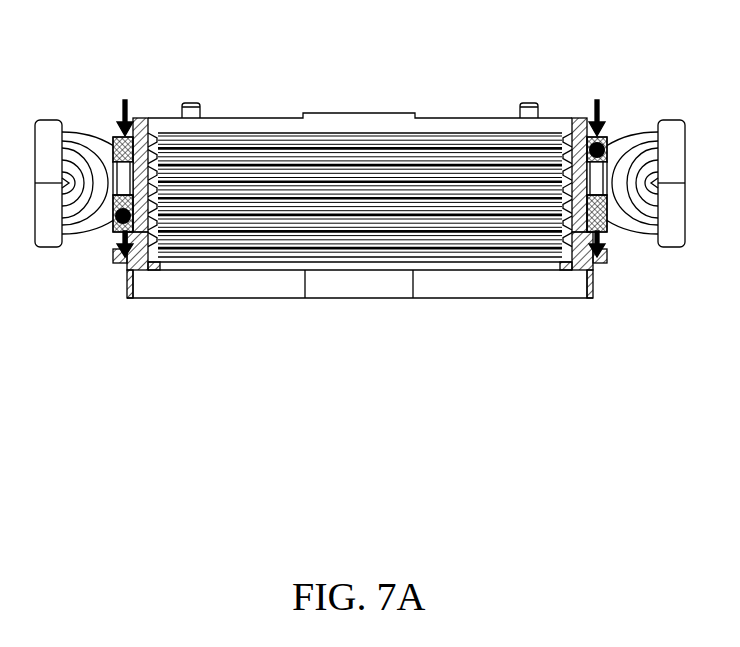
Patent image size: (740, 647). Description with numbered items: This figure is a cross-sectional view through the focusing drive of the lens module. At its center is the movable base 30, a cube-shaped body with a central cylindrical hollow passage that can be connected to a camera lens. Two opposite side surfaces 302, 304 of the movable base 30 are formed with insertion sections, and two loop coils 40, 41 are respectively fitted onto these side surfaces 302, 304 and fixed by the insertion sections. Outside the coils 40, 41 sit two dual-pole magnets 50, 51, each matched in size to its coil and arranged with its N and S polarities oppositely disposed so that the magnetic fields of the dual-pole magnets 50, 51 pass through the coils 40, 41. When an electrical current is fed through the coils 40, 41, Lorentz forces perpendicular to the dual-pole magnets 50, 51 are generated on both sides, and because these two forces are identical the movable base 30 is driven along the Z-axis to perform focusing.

The movable base 30 is at (400, 118).
The loop coil 40 is at (607, 140).
The loop coil 41 is at (113, 137).
The dual-pole magnet 50 is at (670, 245).
The dual-pole magnet 51 is at (50, 240).
The side surface 302 is at (595, 272).
The side surface 304 is at (126, 270).